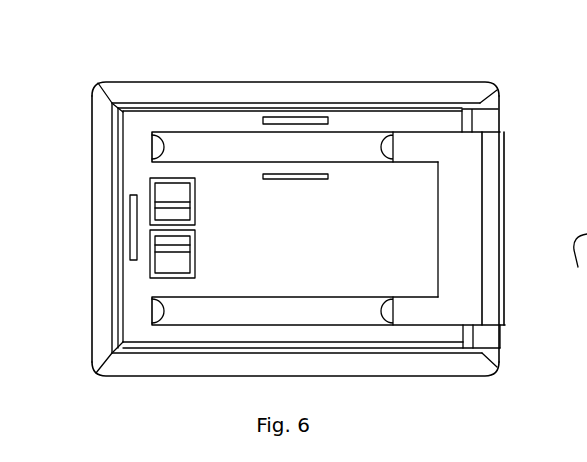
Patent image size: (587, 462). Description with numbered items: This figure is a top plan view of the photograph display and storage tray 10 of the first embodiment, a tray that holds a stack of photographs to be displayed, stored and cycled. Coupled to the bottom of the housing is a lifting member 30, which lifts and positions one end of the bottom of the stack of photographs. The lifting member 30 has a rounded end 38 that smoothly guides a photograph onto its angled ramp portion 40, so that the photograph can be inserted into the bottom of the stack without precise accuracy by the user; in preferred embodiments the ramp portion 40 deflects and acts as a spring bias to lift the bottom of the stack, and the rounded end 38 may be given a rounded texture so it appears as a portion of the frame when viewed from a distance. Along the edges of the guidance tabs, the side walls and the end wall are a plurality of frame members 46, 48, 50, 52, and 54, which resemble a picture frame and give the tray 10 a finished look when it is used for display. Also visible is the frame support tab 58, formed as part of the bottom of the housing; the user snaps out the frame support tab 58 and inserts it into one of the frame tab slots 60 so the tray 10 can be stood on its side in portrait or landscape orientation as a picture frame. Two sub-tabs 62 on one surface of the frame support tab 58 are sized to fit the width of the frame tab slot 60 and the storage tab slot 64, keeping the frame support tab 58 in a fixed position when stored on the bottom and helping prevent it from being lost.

The photograph display and storage tray 10 is at (332, 60).
The lifting member 30 is at (465, 215).
The rounded end 38 is at (493, 241).
The ramp portion 40 is at (435, 153).
The frame member 46 is at (500, 114).
The frame member 48 is at (493, 358).
The frame member 50 is at (137, 92).
The frame member 52 is at (330, 367).
The frame member 54 is at (100, 337).
The frame support tab 58 is at (172, 225).
The frame tab slot 60 is at (133, 217).
The sub-tab 62 is at (185, 203).
The storage tab slot 64 is at (292, 175).